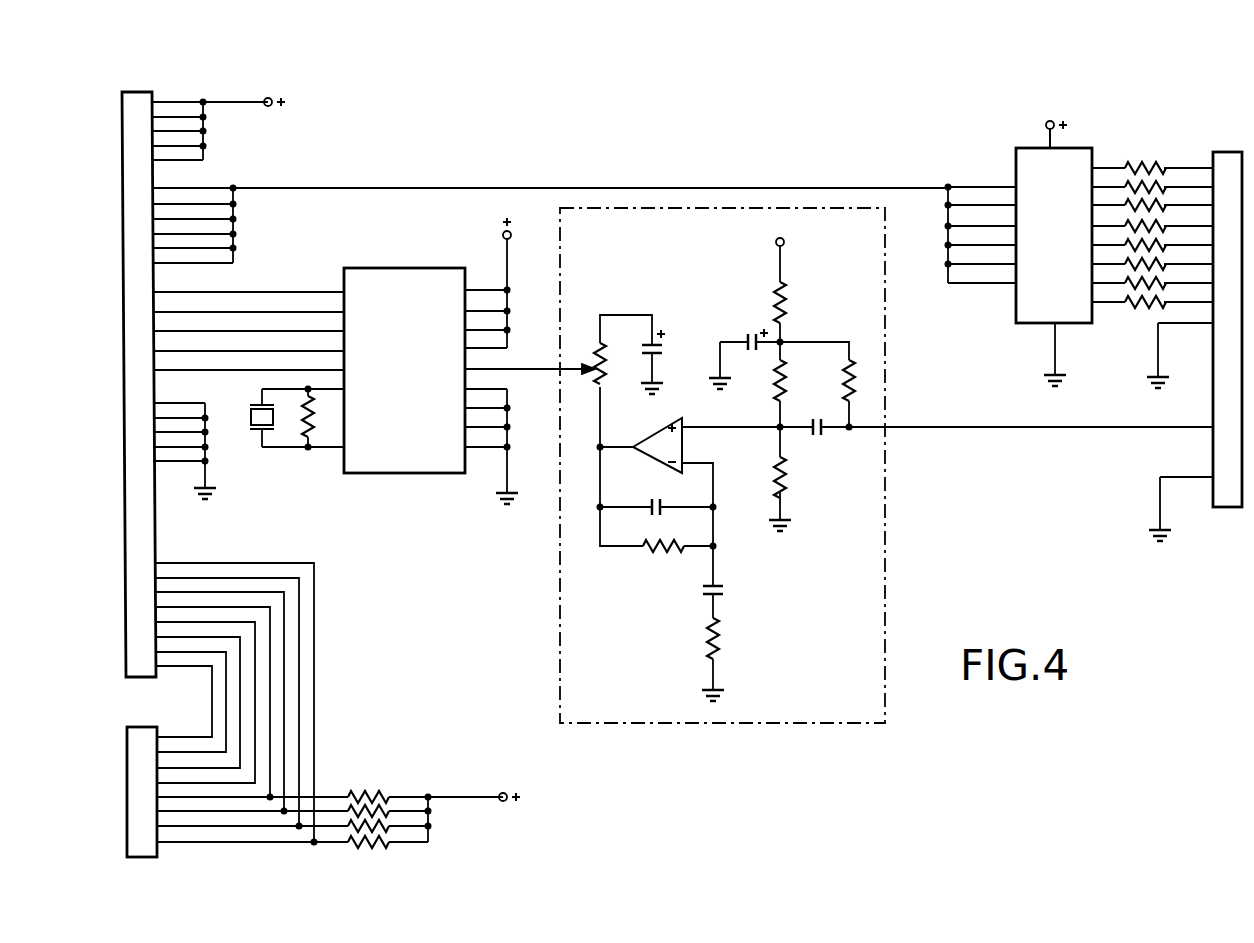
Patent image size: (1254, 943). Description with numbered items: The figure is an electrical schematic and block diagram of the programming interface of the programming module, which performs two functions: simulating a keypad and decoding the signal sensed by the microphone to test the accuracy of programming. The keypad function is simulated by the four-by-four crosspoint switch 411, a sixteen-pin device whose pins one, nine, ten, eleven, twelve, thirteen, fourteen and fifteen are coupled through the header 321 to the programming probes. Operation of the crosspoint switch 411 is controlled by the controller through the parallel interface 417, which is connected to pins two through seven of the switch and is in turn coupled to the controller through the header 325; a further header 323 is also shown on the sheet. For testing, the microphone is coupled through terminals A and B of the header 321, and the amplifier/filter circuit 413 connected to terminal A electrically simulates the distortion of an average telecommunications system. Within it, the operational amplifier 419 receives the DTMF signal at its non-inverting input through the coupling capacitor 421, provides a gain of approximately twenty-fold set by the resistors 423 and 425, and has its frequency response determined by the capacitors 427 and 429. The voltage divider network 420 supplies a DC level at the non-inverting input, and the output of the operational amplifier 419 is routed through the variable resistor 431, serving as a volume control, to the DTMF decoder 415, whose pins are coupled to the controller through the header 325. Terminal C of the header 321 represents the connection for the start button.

The header 321 is at (1222, 152).
The keyboard connector 323 is at (130, 800).
The header 325 is at (137, 297).
The 4-by-4 crosspoint switch 411 is at (1032, 148).
The amplifier/filter circuit 413 is at (791, 727).
The DTMF decoder 415 is at (398, 268).
The parallel interface 417 is at (567, 188).
The operational amplifier 419 is at (662, 428).
The voltage divider network 420 is at (775, 313).
The coupling capacitor 421 is at (819, 440).
The resistor 423 is at (661, 553).
The resistor 425 is at (727, 643).
The capacitor 427 is at (655, 499).
The capacitor 429 is at (727, 590).
The variable resistor 431 is at (595, 355).